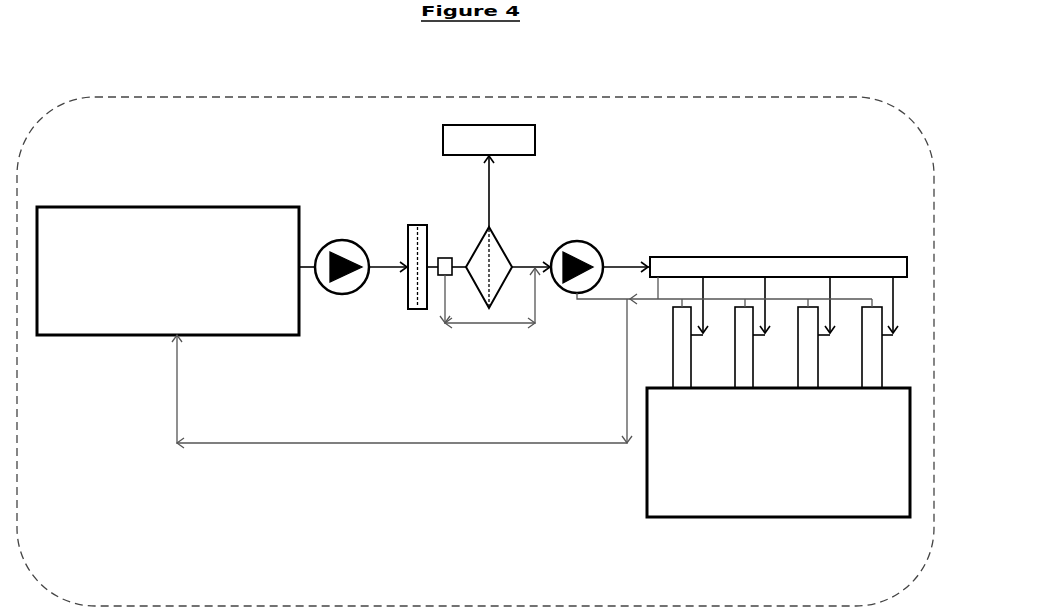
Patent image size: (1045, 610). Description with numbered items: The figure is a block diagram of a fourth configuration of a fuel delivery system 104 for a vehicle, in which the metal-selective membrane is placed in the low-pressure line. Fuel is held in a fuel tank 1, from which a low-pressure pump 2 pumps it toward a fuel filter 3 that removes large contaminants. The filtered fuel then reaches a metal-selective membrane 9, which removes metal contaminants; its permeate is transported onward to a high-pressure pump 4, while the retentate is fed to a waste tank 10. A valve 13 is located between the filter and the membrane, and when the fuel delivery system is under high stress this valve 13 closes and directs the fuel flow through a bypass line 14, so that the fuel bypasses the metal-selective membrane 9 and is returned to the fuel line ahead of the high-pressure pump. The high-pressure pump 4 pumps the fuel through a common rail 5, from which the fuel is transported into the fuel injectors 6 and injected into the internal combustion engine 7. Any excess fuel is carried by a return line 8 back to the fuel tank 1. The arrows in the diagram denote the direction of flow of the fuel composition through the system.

The fuel tank 1 is at (168, 271).
The low-pressure pump 2 is at (342, 259).
The fuel filter 3 is at (417, 258).
The high-pressure pump 4 is at (577, 258).
The common rail 5 is at (785, 267).
The fuel injectors 6 is at (785, 347).
The internal combustion engine 7 is at (778, 452).
The return line 8 is at (522, 373).
The metal-selective membrane 9 is at (489, 266).
The waste tank 10 is at (501, 140).
The valve 13 is at (447, 258).
The bypass line 14 is at (490, 308).
The fuel delivery system 104 is at (876, 103).